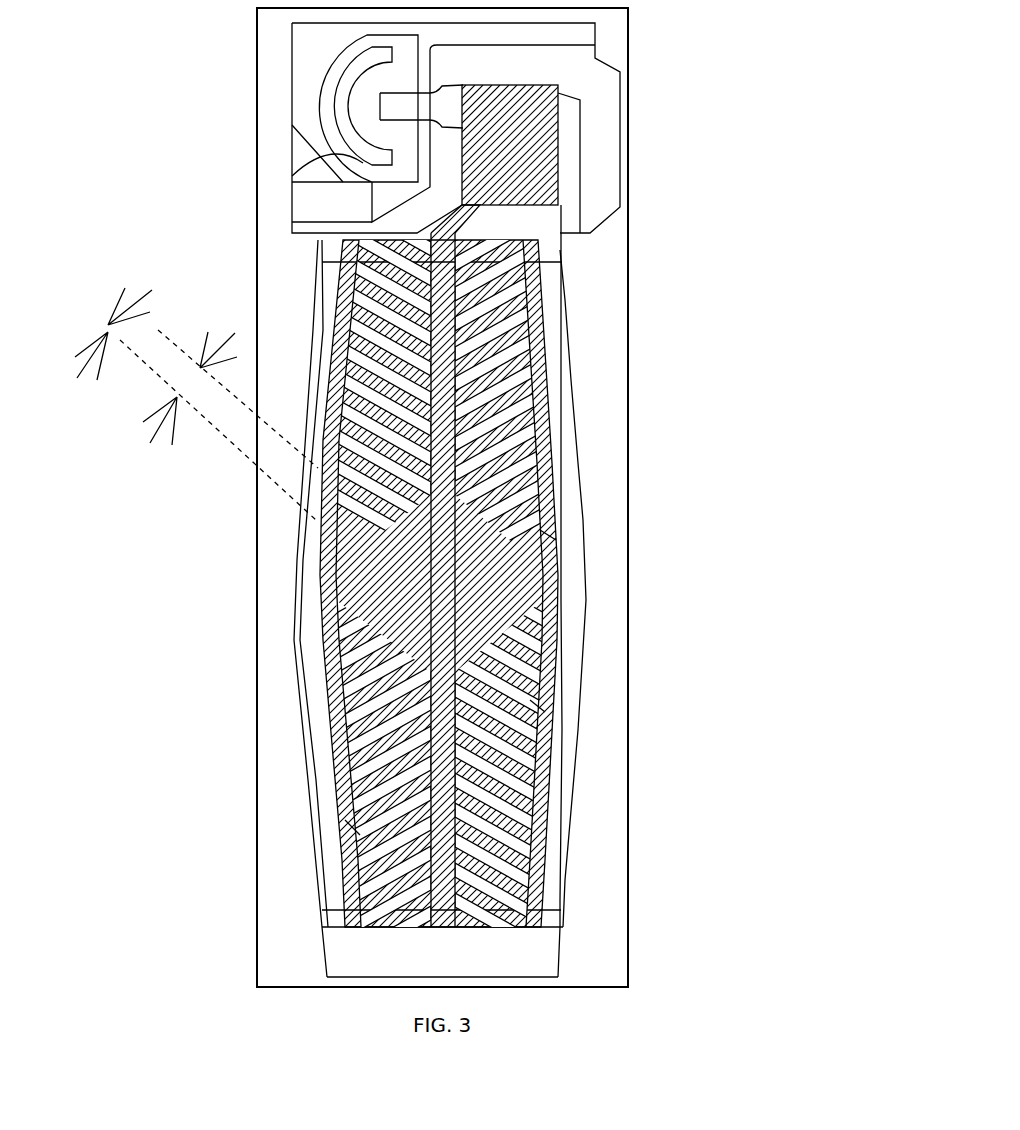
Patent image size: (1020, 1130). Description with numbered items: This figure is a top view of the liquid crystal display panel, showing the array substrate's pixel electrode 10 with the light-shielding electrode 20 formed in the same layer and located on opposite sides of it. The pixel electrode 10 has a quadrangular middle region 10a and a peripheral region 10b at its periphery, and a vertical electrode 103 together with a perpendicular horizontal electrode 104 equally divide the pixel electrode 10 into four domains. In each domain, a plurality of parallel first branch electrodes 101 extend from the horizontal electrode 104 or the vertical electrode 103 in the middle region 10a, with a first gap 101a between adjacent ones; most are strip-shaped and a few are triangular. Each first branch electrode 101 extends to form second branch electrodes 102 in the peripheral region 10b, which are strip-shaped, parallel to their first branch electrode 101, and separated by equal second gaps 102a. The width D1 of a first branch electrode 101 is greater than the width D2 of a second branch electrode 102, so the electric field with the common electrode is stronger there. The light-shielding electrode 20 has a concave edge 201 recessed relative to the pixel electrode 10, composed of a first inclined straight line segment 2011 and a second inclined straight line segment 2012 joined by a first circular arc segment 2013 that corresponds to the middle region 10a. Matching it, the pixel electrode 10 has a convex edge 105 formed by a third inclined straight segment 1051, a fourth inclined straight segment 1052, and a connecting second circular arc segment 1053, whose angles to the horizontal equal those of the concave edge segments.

The light-shielding electrode 20 is at (598, 292).
The pixel electrode 10 is at (557, 575).
The first branch electrode 101 is at (517, 770).
The first gap 101a is at (568, 712).
The second branch electrode 102 is at (365, 769).
The second gap 102a is at (545, 845).
The vertical electrode 103 is at (455, 505).
The horizontal electrode 104 is at (517, 364).
The convex edge 105 is at (575, 586).
The third inclined straight segment 1051 is at (551, 391).
The fourth inclined straight segment 1052 is at (548, 895).
The second circular arc segment 1053 is at (568, 605).
The middle region 10a is at (560, 537).
The peripheral region 10b is at (365, 362).
The concave edge 201 is at (293, 642).
The first inclined straight line segment 2011 is at (320, 307).
The second inclined straight line segment 2012 is at (310, 777).
The first circular arc segment 2013 is at (295, 553).
The width of the first branch electrode D1 is at (218, 426).
The width of the second branch electrode D2 is at (188, 378).